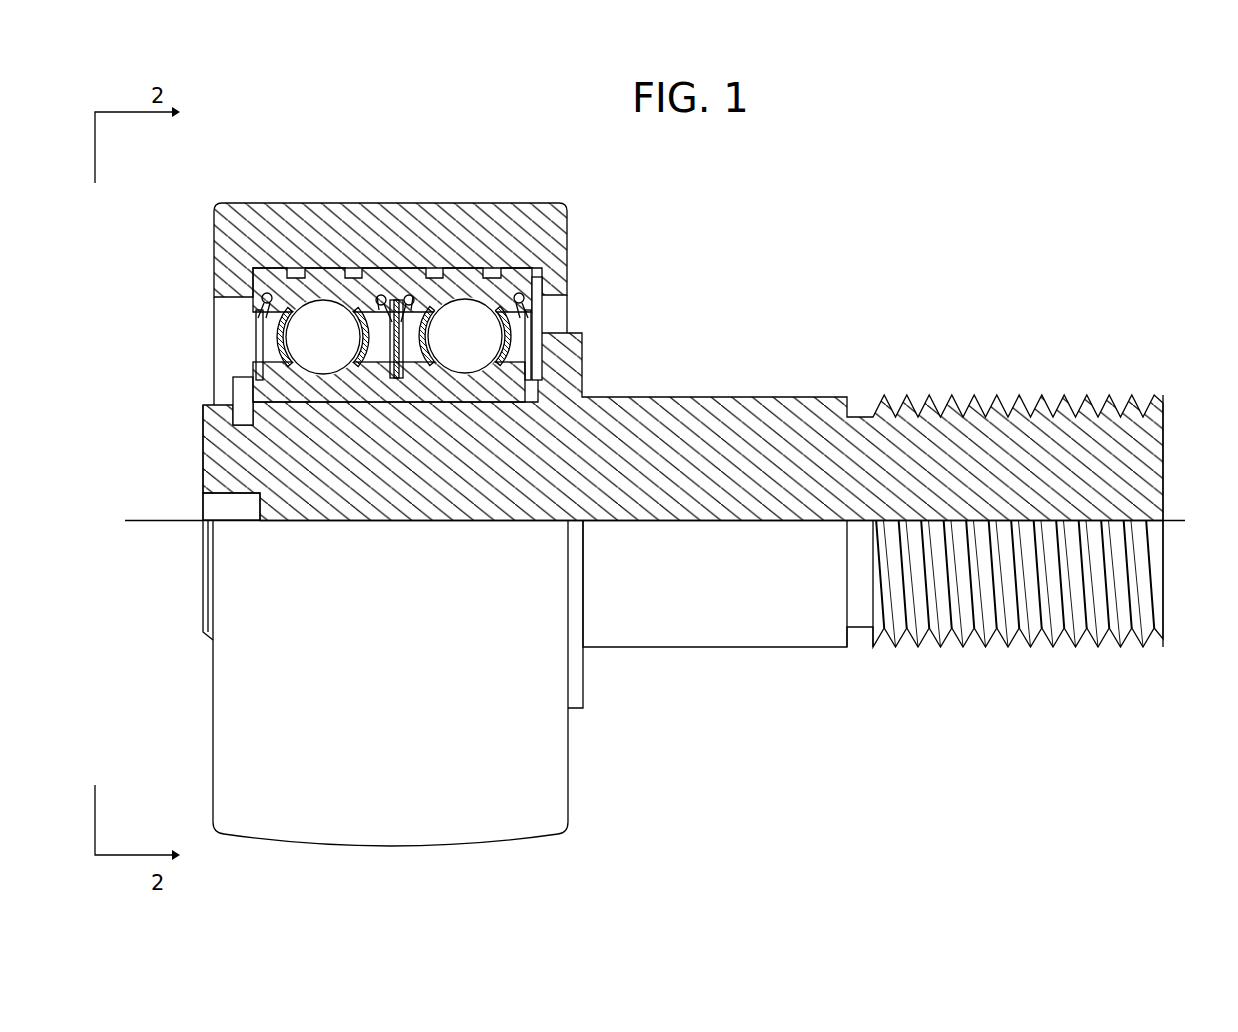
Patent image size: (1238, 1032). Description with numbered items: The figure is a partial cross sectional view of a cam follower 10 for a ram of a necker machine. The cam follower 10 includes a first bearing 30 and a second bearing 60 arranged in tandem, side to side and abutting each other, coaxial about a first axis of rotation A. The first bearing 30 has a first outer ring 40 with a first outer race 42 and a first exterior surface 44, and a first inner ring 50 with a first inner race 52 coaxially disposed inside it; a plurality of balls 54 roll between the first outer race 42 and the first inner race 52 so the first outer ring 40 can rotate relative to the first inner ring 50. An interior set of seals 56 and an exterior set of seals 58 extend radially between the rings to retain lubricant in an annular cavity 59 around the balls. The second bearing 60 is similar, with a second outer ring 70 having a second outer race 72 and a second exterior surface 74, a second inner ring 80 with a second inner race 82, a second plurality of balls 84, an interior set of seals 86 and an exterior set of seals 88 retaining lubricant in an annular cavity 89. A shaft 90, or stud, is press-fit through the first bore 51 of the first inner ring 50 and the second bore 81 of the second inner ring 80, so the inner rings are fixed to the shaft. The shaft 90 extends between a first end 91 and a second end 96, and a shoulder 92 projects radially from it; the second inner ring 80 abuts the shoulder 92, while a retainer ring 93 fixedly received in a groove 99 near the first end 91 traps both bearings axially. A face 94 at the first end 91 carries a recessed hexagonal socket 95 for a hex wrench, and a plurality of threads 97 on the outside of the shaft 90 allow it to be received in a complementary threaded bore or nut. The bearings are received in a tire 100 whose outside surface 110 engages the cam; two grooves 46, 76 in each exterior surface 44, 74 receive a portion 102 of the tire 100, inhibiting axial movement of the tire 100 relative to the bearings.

The cam follower 10 is at (812, 263).
The first bearing 30 is at (237, 334).
The first outer ring 40 is at (272, 278).
The first outer race 42 is at (330, 278).
The first exterior surface 44 is at (345, 276).
The grooves 46 is at (312, 278).
The first inner ring 50 is at (355, 525).
The first bore 51 is at (298, 505).
The first inner race 52 is at (330, 440).
The plurality of balls 54 is at (318, 440).
The interior set of seals 56 is at (282, 380).
The exterior set of seals 58 is at (262, 362).
The annular cavity 59 is at (262, 345).
The second bearing 60 is at (553, 298).
The second outer ring 70 is at (545, 213).
The second outer race 72 is at (513, 275).
The second exterior surface 74 is at (462, 290).
The grooves 76 is at (442, 275).
The second inner ring 80 is at (398, 378).
The second bore 81 is at (430, 505).
The second inner race 82 is at (476, 400).
The second plurality of balls 84 is at (500, 328).
The interior set of seals 86 is at (433, 365).
The exterior set of seals 88 is at (567, 376).
The annular cavity 89 is at (503, 352).
The shaft 90 is at (724, 633).
The first end 91 is at (200, 487).
The shoulder 92 is at (583, 397).
The retainer ring 93 is at (238, 408).
The face 94 is at (203, 592).
The recessed hexagonal socket 95 is at (215, 510).
The second end 96 is at (1165, 470).
The threads 97 is at (1005, 405).
The groove 99 is at (240, 420).
The tire 100 is at (224, 218).
The portion of the tire 102 is at (295, 270).
The outside surface 110 is at (381, 845).
The first axis of rotation A is at (184, 525).